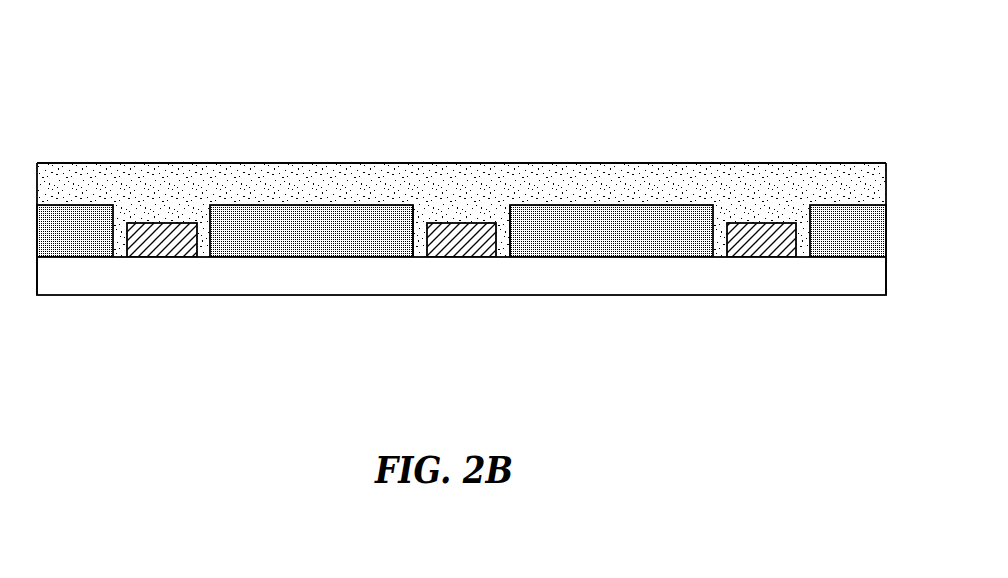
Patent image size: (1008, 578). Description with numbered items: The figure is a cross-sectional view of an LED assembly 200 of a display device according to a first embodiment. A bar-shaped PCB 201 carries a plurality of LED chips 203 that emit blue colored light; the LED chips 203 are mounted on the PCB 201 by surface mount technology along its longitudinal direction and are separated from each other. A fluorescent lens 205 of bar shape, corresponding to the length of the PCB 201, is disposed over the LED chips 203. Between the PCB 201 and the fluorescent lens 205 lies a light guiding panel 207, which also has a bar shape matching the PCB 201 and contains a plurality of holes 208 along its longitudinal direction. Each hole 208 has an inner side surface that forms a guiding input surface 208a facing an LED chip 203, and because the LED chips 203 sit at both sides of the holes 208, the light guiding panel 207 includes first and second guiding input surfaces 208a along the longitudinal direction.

The LED assembly 200 is at (777, 108).
The PCB 201 is at (147, 280).
The LED chip 203 is at (167, 245).
The fluorescent lens 205 is at (342, 185).
The light guiding panel 207 is at (313, 240).
The hole 208 is at (722, 257).
The guiding input surface 208a is at (422, 232).